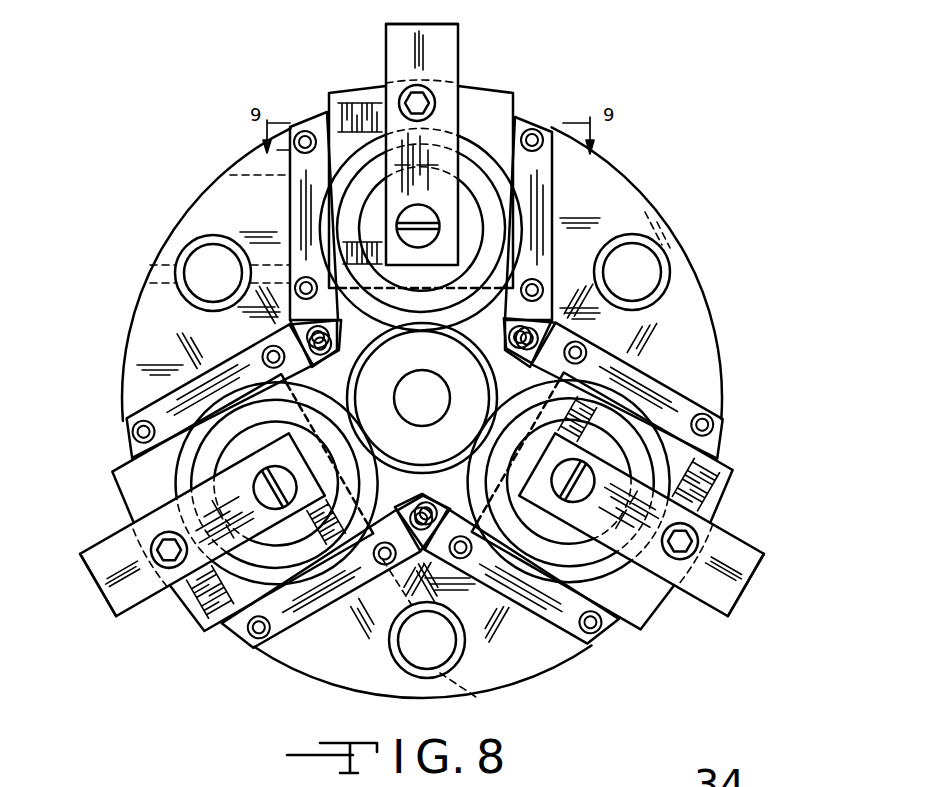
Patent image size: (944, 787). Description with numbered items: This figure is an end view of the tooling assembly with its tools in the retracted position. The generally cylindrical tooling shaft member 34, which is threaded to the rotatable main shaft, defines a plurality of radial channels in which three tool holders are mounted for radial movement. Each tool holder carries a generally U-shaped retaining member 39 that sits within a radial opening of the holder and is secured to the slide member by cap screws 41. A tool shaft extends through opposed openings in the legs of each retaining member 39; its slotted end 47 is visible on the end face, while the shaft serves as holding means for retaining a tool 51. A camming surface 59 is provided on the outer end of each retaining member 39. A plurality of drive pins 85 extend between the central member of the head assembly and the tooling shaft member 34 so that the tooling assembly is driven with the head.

The tooling shaft member 34 is at (632, 183).
The retaining member 39 is at (460, 52).
The cap screws 41 is at (401, 96).
The slotted end 47 is at (402, 212).
The tool 51 is at (525, 223).
The camming surface 59 is at (400, 12).
The drive pins 85 is at (193, 283).